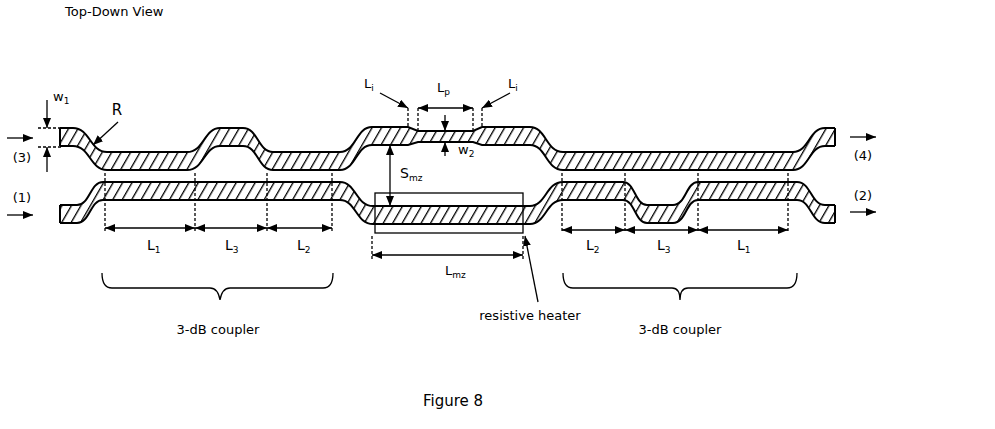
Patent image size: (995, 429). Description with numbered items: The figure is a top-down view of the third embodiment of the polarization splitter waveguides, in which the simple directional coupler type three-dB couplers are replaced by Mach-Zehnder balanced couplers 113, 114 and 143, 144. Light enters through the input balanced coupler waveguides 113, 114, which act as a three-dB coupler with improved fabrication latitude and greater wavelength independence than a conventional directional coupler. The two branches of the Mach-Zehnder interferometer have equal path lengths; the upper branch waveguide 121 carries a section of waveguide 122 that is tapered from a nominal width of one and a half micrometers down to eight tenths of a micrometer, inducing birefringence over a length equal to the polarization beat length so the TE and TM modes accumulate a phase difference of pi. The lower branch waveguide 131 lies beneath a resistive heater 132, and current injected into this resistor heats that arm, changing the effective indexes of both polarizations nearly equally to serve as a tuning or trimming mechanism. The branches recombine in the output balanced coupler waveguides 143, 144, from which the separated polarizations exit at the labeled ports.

The Mach-Zehnder balanced coupler waveguide 113 is at (140, 150).
The Mach-Zehnder balanced coupler waveguide 114 is at (133, 197).
The interferometer arm waveguide 121 is at (347, 140).
The section of waveguide 122 is at (437, 130).
The interferometer arm waveguide 131 is at (353, 207).
The resistive heater 132 is at (425, 218).
The Mach-Zehnder balanced coupler waveguide 143 is at (677, 150).
The Mach-Zehnder balanced coupler waveguide 144 is at (757, 197).